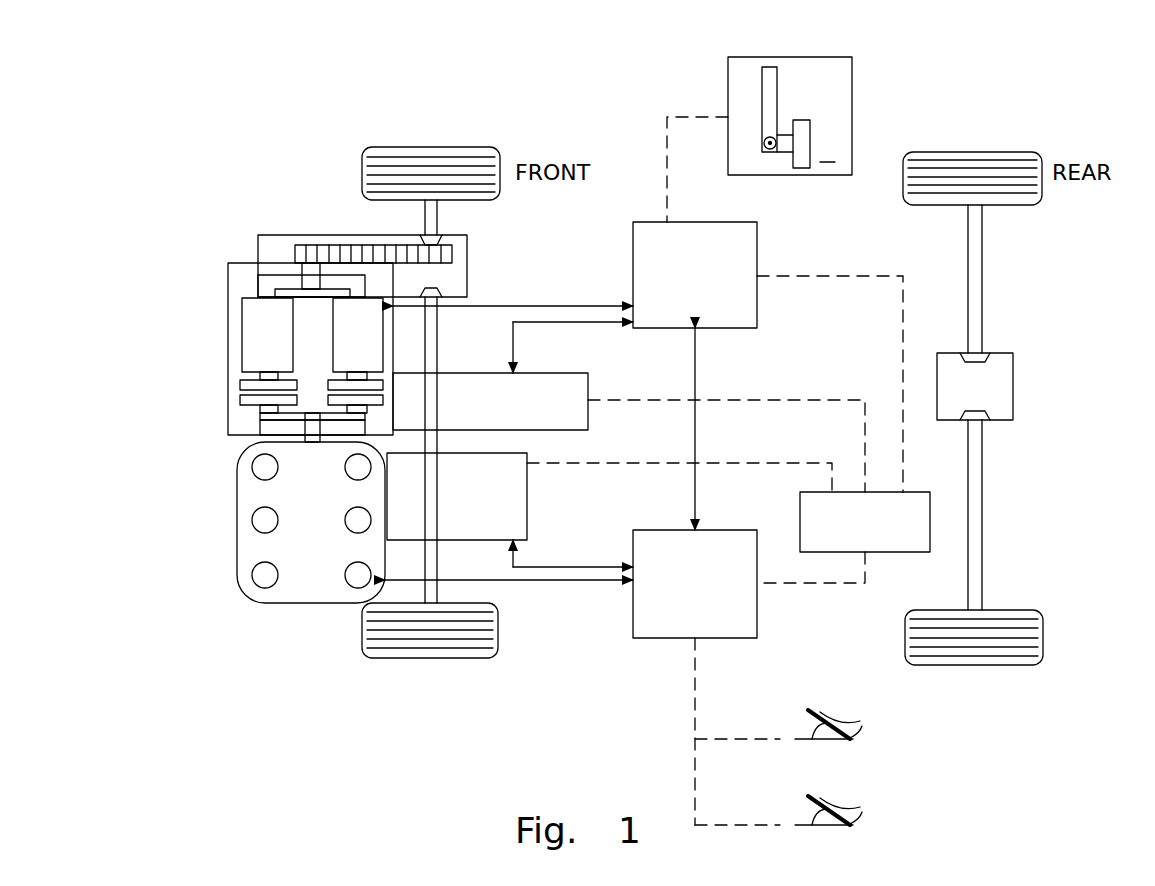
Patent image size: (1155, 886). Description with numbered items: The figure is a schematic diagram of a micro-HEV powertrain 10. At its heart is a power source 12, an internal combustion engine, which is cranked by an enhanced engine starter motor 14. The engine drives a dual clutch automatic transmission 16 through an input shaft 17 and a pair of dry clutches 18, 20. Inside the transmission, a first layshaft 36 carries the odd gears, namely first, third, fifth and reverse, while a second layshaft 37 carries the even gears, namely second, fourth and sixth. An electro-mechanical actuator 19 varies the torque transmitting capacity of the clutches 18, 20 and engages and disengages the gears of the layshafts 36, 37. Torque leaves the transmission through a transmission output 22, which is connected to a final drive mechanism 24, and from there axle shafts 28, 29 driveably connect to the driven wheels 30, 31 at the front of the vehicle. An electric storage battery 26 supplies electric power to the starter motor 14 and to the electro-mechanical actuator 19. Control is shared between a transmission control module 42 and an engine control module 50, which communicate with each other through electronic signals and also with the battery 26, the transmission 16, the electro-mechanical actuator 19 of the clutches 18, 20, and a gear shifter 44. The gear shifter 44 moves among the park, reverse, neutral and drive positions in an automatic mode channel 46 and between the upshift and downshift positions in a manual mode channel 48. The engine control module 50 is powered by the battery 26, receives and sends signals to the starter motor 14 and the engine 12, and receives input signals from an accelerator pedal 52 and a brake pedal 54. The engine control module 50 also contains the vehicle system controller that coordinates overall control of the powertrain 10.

The micro-HEV powertrain 10 is at (268, 158).
The power source 12 is at (324, 603).
The enhanced engine starter motor 14 is at (527, 490).
The dual clutch automatic transmission 16 is at (228, 323).
The input shaft 17 is at (312, 425).
The dry clutch 18 is at (255, 385).
The electro-mechanical actuator 19 is at (588, 412).
The dry clutch 20 is at (345, 398).
The transmission output 22 is at (310, 275).
The final drive mechanism 24 is at (467, 250).
The electric storage battery 26 is at (800, 515).
The axle shaft 28 is at (437, 212).
The axle shaft 29 is at (437, 590).
The driven wheel 30 is at (362, 172).
The driven wheel 31 is at (405, 658).
The first layshaft 36 is at (248, 322).
The second layshaft 37 is at (383, 338).
The transmission control module 42 is at (757, 292).
The gear shifter 44 is at (852, 127).
The automatic mode channel 46 is at (772, 77).
The manual mode channel 48 is at (800, 125).
The engine control module 50 is at (757, 618).
The accelerator pedal 52 is at (808, 712).
The brake pedal 54 is at (808, 798).